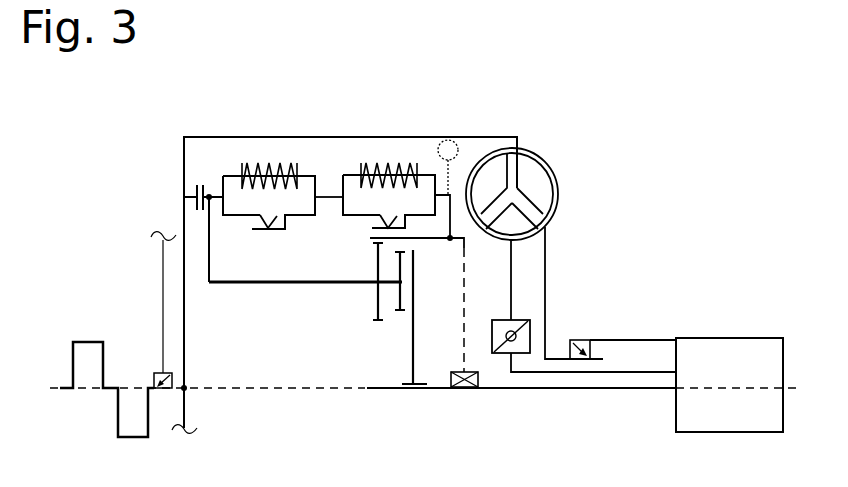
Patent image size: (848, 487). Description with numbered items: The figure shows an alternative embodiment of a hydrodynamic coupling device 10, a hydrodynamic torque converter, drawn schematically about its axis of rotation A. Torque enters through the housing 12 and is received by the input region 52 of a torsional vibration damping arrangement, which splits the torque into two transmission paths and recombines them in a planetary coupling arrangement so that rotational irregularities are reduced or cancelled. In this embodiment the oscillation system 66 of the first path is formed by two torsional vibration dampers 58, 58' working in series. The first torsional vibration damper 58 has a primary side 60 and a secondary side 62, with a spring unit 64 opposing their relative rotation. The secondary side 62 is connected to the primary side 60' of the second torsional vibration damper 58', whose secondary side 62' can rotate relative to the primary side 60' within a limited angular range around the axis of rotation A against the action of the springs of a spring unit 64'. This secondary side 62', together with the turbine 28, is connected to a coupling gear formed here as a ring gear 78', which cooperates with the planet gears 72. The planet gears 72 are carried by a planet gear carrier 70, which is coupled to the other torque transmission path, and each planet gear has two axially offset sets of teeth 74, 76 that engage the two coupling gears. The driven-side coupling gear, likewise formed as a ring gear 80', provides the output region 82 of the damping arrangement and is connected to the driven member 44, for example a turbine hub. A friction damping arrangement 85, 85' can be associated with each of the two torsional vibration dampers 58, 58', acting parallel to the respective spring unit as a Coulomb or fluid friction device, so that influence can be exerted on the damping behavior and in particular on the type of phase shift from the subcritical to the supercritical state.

The hydrodynamic coupling device 10 is at (556, 60).
The housing 12 is at (517, 136).
The turbine 28 is at (525, 150).
The driven member 44 is at (422, 388).
The input region 52 is at (209, 195).
The torsional vibration damper 58 is at (269, 141).
The torsional vibration damper 58' is at (413, 121).
The primary side 60 is at (220, 155).
The primary side 60' is at (372, 160).
The secondary side 62 is at (333, 134).
The secondary side 62' is at (462, 154).
The spring unit 64 is at (254, 139).
The spring unit 64' is at (400, 116).
The oscillation system 66 is at (321, 78).
The planet gear carrier 70 is at (288, 283).
The planet gears 72 is at (376, 258).
The teeth 74 is at (378, 320).
The teeth 76 is at (400, 310).
The ring gear 78' is at (498, 301).
The ring gear 80' is at (533, 317).
The output region 82 is at (430, 318).
The friction damping arrangement 85 is at (188, 262).
The friction damping arrangement 85' is at (520, 186).
The axis of rotation A is at (785, 386).